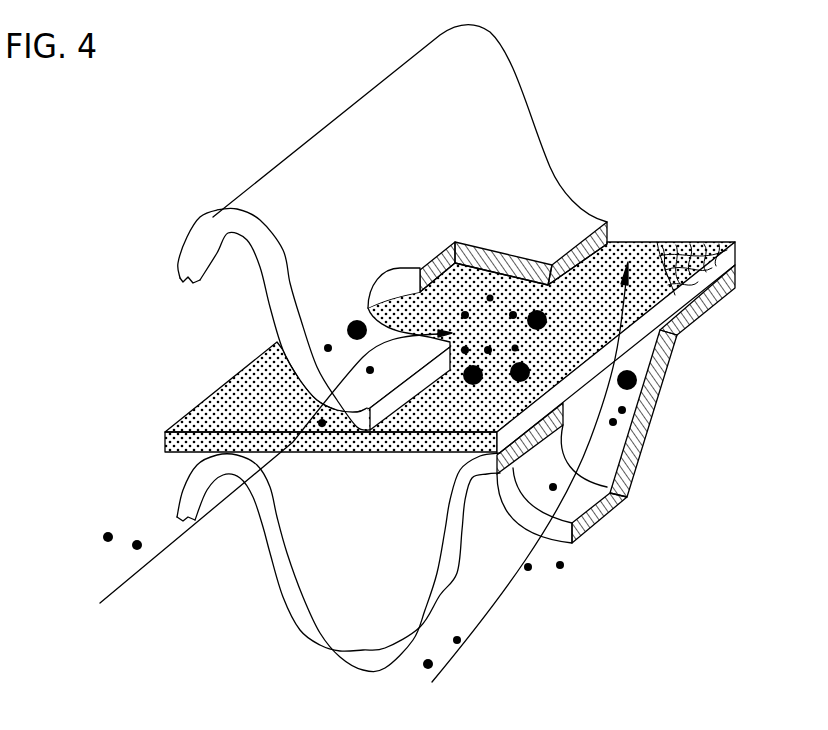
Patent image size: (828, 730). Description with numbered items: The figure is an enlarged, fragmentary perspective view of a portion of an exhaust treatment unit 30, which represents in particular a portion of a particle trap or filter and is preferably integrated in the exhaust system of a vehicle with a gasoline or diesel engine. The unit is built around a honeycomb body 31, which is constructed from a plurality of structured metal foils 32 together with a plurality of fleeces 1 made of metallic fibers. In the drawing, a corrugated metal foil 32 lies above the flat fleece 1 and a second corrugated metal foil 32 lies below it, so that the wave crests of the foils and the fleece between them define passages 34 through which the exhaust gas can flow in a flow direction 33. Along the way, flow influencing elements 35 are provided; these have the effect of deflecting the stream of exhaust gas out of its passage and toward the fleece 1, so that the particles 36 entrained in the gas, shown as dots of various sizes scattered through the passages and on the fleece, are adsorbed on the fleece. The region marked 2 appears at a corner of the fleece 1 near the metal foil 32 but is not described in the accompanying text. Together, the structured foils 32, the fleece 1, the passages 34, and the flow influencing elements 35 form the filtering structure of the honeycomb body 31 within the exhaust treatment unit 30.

The fleece 1 is at (660, 323).
The nanofiber layer 2 is at (693, 240).
The exhaust treatment unit 30 is at (184, 172).
The honeycomb body 31 is at (633, 628).
The structured metal foil 32 is at (503, 80).
The flow direction 33 is at (467, 648).
The passage 34 is at (310, 565).
The flow influencing element 35 is at (420, 263).
The particle 36 is at (650, 392).